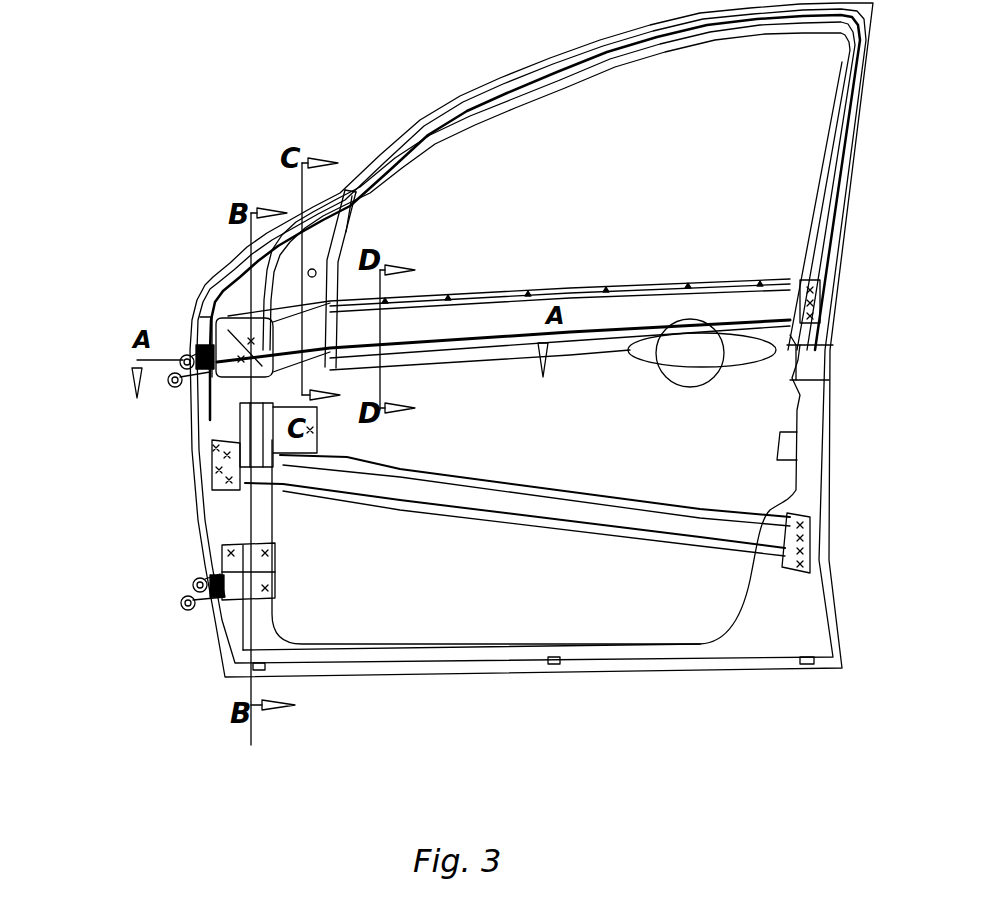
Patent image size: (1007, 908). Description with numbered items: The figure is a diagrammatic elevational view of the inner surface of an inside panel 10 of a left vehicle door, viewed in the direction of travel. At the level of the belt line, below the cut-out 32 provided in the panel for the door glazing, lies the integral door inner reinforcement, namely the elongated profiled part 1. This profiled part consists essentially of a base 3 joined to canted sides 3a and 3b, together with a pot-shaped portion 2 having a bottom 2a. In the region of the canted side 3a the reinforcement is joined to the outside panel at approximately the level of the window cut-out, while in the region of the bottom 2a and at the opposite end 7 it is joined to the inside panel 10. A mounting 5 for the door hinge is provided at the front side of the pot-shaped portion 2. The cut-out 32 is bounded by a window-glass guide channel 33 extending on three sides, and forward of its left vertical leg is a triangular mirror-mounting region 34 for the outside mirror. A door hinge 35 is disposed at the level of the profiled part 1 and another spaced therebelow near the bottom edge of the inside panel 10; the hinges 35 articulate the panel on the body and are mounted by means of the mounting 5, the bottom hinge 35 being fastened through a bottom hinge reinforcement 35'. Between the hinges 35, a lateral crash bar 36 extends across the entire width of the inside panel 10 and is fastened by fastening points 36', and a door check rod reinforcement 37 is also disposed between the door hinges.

The elongated profiled part 1 is at (590, 316).
The pot-shaped portion 2 is at (226, 297).
The bottom 2a is at (200, 317).
The base 3 is at (645, 312).
The canted side 3a is at (500, 298).
The canted side 3b is at (602, 337).
The mounting 5 is at (196, 347).
The opposite end 7 is at (792, 330).
The inside panel 10 is at (583, 623).
The cut-out 32 is at (652, 149).
The window-glass guide channel 33 is at (340, 230).
The mirror-mounting region 34 is at (334, 240).
The door hinge 35 is at (162, 480).
The bottom hinge reinforcement 35' is at (296, 571).
The lateral crash bar 36 is at (517, 499).
The fastening points 36' is at (455, 543).
The door check rod reinforcement 37 is at (282, 440).